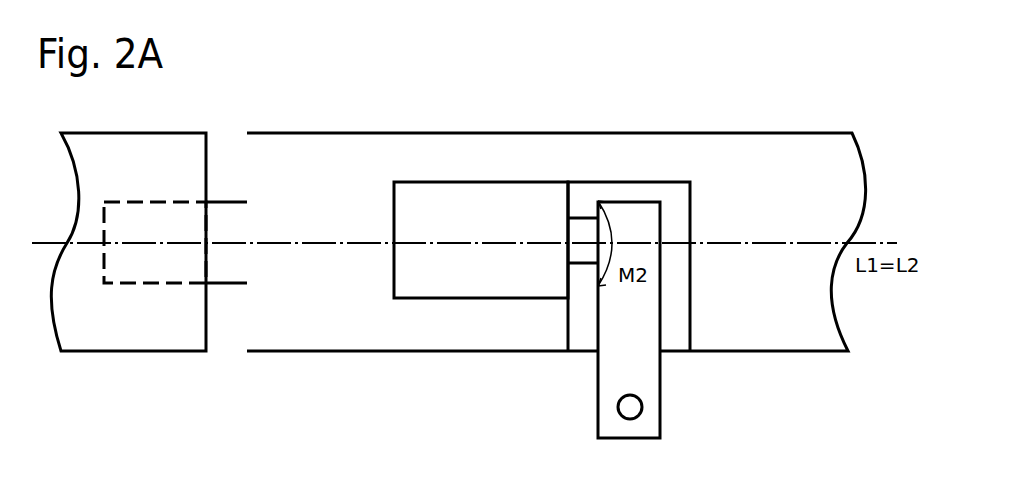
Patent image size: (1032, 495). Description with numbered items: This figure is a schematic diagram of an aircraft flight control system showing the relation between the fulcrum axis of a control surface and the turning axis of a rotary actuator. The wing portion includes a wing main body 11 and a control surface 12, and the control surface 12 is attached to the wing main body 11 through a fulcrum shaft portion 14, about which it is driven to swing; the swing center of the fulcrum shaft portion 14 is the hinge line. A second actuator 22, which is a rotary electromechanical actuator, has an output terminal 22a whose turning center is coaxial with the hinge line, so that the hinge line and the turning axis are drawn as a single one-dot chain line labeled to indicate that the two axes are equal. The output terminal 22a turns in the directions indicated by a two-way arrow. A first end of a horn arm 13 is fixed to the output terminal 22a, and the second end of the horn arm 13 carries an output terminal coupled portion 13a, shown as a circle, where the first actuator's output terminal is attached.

The wing main body 11 is at (104, 346).
The control surface 12 is at (280, 347).
The horn arm 13 is at (653, 385).
The output terminal coupled portion 13a is at (640, 412).
The fulcrum shaft portion 14 is at (227, 280).
The second actuator 22 is at (443, 293).
The output terminal 22a is at (577, 258).